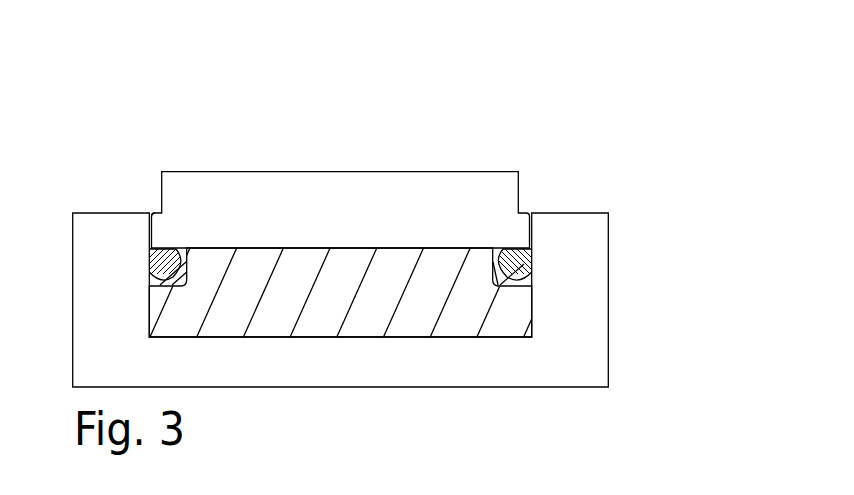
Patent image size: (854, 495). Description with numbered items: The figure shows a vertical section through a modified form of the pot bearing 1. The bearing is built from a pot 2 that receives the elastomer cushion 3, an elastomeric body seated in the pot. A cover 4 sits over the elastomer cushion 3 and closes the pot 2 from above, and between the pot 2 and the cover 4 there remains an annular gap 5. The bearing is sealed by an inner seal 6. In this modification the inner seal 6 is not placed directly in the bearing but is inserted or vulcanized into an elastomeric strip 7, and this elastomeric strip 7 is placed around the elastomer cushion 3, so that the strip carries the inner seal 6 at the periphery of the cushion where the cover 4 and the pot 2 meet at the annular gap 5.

The pot bearing 1 is at (496, 112).
The pot 2 is at (543, 368).
The elastomer cushion 3 is at (490, 309).
The cover 4 is at (498, 183).
The annular gap 5 is at (153, 212).
The inner seal 6 is at (522, 258).
The elastomeric strip 7 is at (508, 278).